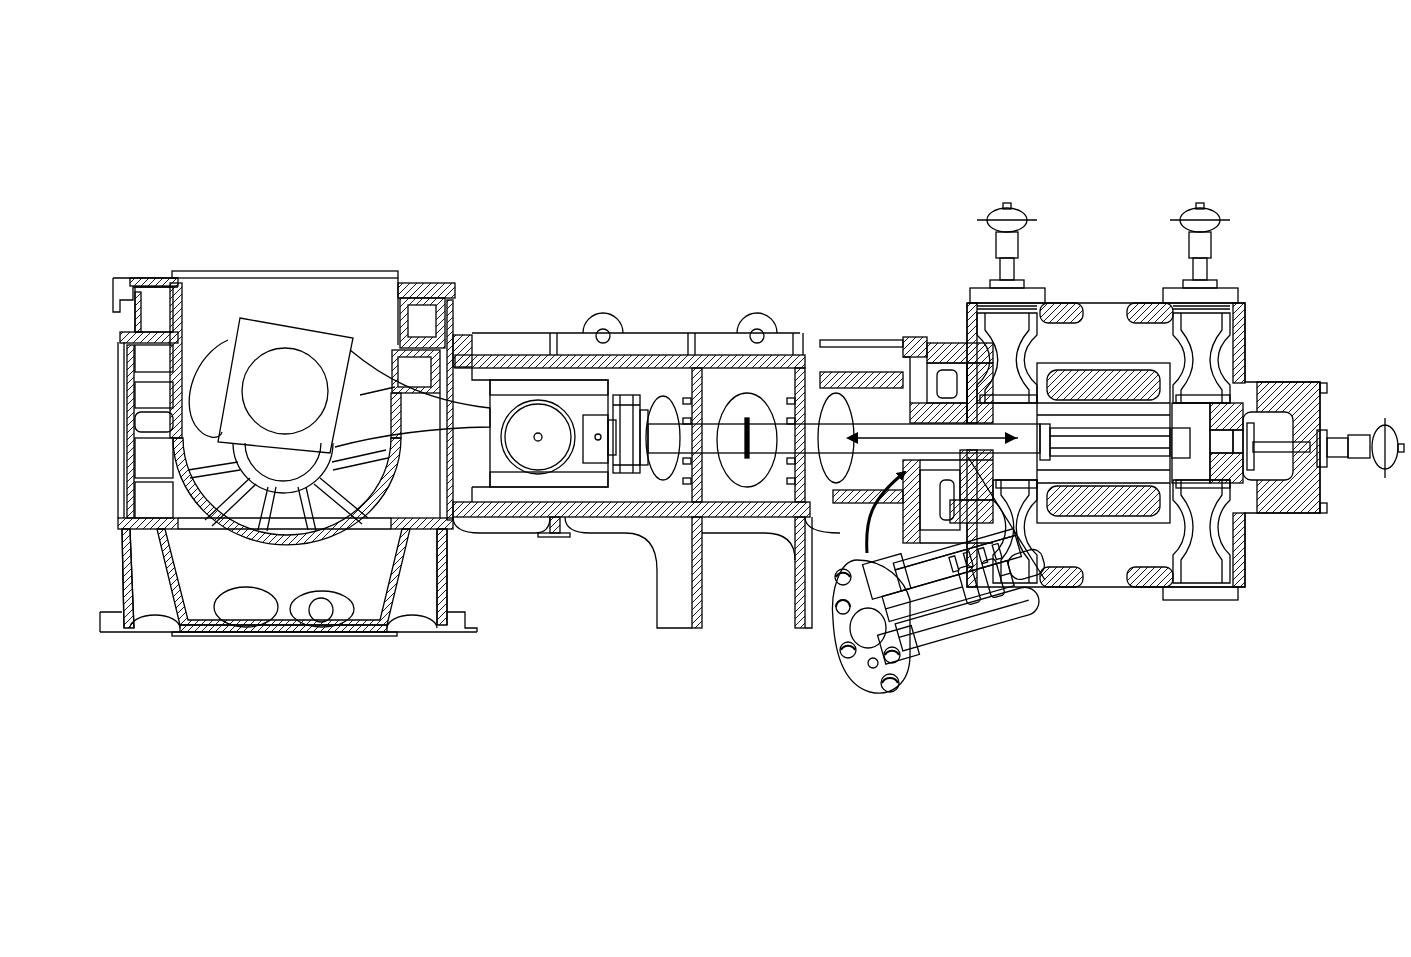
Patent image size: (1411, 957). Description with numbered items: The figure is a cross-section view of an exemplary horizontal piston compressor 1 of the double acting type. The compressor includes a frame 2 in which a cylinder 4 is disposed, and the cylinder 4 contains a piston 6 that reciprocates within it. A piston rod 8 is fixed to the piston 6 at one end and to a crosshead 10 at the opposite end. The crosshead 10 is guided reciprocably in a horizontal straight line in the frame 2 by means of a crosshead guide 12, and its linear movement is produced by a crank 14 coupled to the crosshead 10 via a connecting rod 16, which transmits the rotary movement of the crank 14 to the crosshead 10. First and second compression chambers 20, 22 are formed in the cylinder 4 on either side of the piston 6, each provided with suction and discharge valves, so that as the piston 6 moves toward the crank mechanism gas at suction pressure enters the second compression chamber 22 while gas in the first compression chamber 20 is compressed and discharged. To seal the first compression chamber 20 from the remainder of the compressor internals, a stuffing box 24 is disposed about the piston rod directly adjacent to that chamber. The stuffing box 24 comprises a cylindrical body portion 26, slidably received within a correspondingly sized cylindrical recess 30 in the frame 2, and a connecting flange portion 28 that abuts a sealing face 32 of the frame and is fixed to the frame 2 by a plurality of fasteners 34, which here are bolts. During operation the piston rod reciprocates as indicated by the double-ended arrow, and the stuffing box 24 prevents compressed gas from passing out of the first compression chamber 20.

The horizontal piston compressor 1 is at (376, 145).
The frame 2 is at (483, 508).
The cylinder 4 is at (1185, 412).
The piston 6 is at (1183, 417).
The piston rod 8 is at (663, 415).
The crosshead 10 is at (578, 378).
The crosshead guide 12 is at (625, 376).
The crank 14 is at (284, 383).
The connecting rod 16 is at (418, 420).
The first compression chamber 20 is at (1010, 408).
The second compression chamber 22 is at (1187, 472).
The stuffing box 24 is at (958, 640).
The cylindrical body portion 26 is at (1040, 585).
The connecting flange portion 28 is at (903, 465).
The cylindrical recess 30 is at (968, 455).
The sealing face 32 is at (905, 390).
The fasteners 34 is at (853, 563).